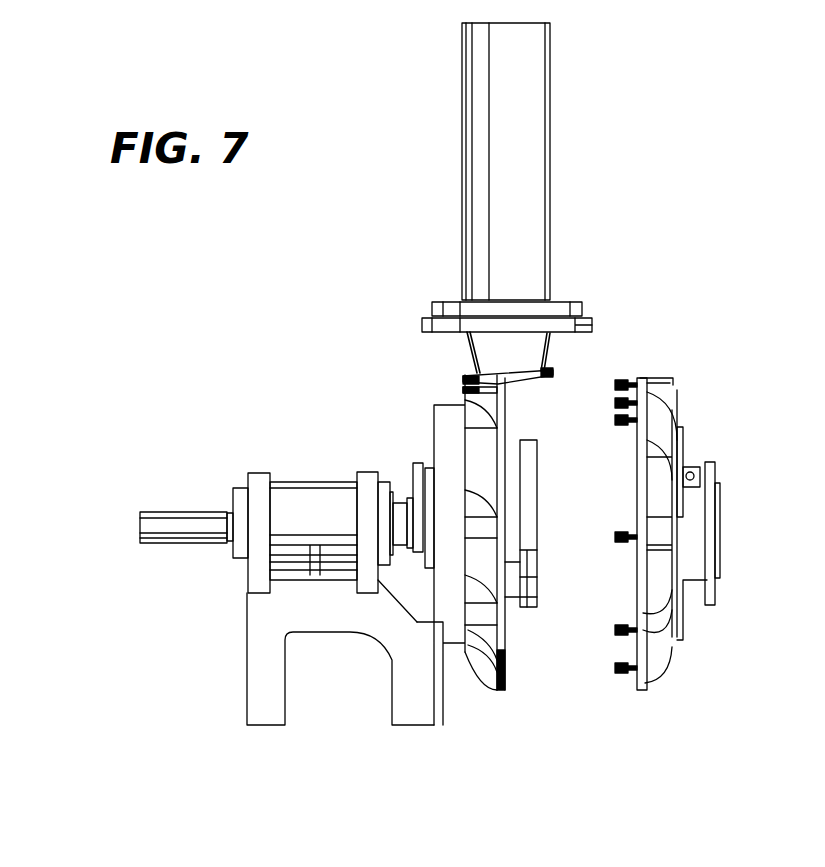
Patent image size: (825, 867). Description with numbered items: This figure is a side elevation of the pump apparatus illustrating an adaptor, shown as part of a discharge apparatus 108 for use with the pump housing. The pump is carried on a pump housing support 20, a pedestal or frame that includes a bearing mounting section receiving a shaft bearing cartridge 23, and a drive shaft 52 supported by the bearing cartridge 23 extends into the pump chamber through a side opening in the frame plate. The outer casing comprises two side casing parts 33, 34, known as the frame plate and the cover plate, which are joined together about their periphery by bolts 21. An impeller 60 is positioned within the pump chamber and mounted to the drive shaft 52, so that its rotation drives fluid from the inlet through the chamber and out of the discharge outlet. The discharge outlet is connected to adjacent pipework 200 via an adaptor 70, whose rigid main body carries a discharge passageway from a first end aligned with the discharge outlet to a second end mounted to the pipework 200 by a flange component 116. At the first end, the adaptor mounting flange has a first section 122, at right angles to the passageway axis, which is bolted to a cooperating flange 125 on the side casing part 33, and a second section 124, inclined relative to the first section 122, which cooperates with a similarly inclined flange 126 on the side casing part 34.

The pipework 200 is at (548, 215).
The flange component 116 is at (592, 323).
The adaptor 70 is at (572, 347).
The second section 124 is at (550, 373).
The first section 122 is at (462, 380).
The flange 125 is at (462, 392).
The discharge apparatus 108 is at (396, 344).
The flange 126 is at (674, 380).
The drive shaft 52 is at (155, 522).
The shaft bearing cartridge 23 is at (293, 538).
The pump housing support 20 is at (413, 687).
The side casing part 33 is at (497, 678).
The impeller 60 is at (535, 607).
The bolts 21 is at (622, 680).
The side casing part 34 is at (667, 665).